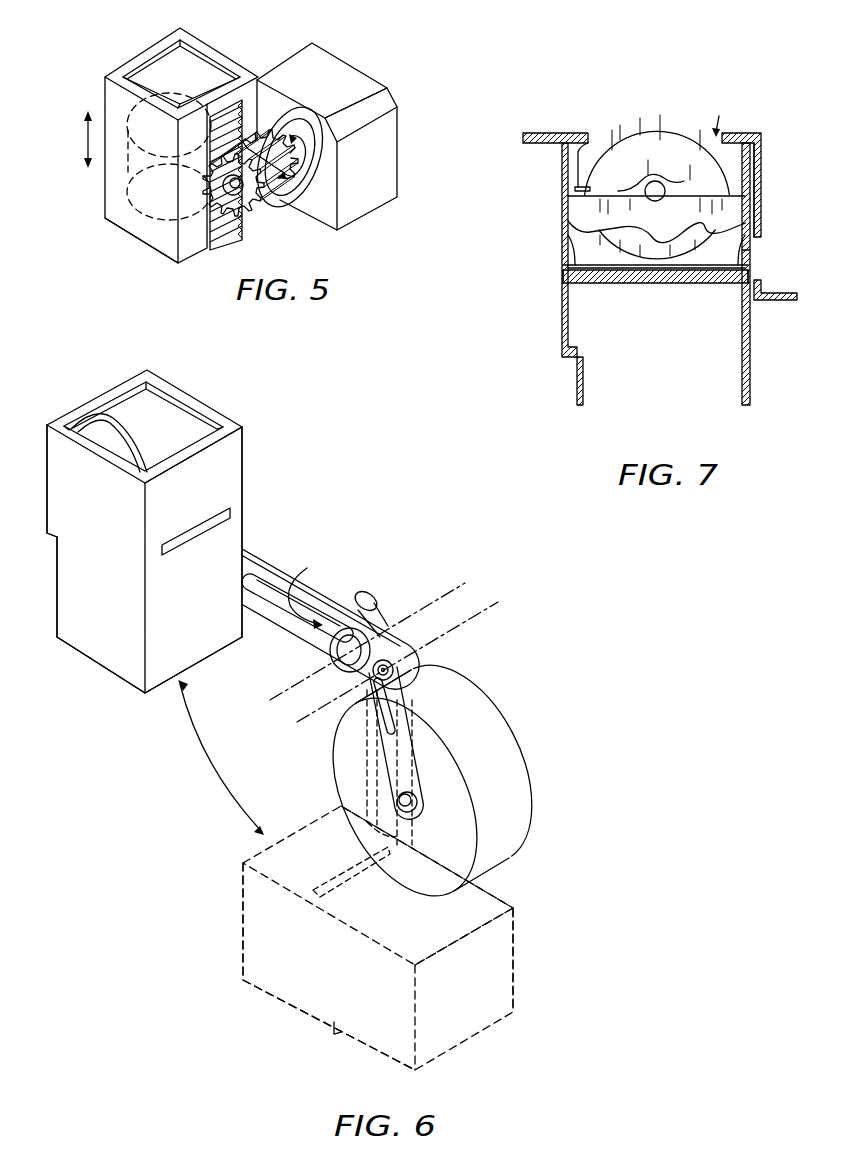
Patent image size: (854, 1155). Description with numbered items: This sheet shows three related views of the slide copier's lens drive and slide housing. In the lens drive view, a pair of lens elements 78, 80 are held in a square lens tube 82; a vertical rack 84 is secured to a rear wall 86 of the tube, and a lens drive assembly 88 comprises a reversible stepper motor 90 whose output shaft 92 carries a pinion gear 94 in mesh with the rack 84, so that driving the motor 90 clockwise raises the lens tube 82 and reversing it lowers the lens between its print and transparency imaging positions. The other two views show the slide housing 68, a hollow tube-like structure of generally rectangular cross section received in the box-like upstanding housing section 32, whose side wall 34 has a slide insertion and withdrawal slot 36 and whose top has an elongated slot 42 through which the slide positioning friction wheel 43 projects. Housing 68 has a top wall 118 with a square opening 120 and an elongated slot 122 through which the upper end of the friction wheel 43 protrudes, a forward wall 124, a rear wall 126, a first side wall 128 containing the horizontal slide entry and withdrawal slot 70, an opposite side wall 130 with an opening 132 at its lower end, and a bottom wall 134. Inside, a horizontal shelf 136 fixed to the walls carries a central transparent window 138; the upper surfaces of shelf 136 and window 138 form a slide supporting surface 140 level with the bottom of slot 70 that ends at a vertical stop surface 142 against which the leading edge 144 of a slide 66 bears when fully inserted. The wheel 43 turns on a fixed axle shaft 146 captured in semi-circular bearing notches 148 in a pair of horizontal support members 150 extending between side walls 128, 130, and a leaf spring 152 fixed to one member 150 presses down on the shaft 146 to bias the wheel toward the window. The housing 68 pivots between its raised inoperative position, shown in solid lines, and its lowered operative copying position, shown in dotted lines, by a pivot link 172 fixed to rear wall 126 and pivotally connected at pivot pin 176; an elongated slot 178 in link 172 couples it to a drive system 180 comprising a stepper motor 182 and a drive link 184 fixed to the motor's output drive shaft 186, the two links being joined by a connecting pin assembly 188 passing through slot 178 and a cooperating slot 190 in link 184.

In FIG. 5, the lens element 78 is at (138, 192).
In FIG. 5, the lens element 80 is at (140, 110).
In FIG. 5, the square lens tube 82 is at (211, 49).
In FIG. 5, the vertical rack 84 is at (236, 236).
In FIG. 5, the rear wall 86 is at (194, 255).
In FIG. 5, the lens drive assembly 88 is at (398, 99).
In FIG. 5, the reversible stepper motor 90 is at (350, 78).
In FIG. 5, the output shaft 92 is at (288, 156).
In FIG. 5, the pinion gear 94 is at (268, 210).
In FIG. 7, the housing section 32 is at (760, 138).
In FIG. 7, the side wall 34 is at (762, 168).
In FIG. 7, the slide insertion and withdrawal slot 36 is at (761, 286).
In FIG. 7, the elongated slot 42 is at (724, 117).
In FIG. 7, the slide positioning friction wheel 43 is at (672, 118).
In FIG. 6, the slide positioning friction wheel 43 is at (90, 430).
In FIG. 7, the slide 66 is at (750, 243).
In FIG. 6, the slide housing 68 is at (240, 460).
In FIG. 7, the slide entry and withdrawal slot 70 is at (751, 262).
In FIG. 6, the slide entry and withdrawal slot 70 is at (173, 551).
In FIG. 7, the top wall 118 is at (570, 158).
In FIG. 6, the top wall 118 is at (205, 412).
In FIG. 6, the square opening 120 is at (153, 395).
In FIG. 7, the elongated slot 122 is at (594, 137).
In FIG. 6, the elongated slot 122 is at (102, 450).
In FIG. 6, the forward wall 124 is at (290, 952).
In FIG. 6, the rear wall 126 is at (242, 497).
In FIG. 7, the first side wall 128 is at (752, 339).
In FIG. 6, the first side wall 128 is at (237, 535).
In FIG. 7, the opposite side wall 130 is at (562, 232).
In FIG. 6, the opposite side wall 130 is at (48, 452).
In FIG. 6, the opening 132 is at (364, 1040).
In FIG. 6, the bottom wall 134 is at (495, 972).
In FIG. 7, the shelf 136 is at (730, 285).
In FIG. 7, the transparent window 138 is at (630, 285).
In FIG. 7, the slide supporting surface 140 is at (578, 285).
In FIG. 7, the vertical stop surface 142 is at (565, 250).
In FIG. 7, the leading edge 144 is at (565, 272).
In FIG. 7, the axle shaft 146 is at (668, 184).
In FIG. 7, the bearing notches 148 is at (660, 204).
In FIG. 7, the friction wheel support members 150 is at (583, 205).
In FIG. 7, the leaf spring 152 is at (628, 186).
In FIG. 6, the pivot link 172 is at (283, 572).
In FIG. 6, the pivot pin 176 is at (373, 672).
In FIG. 6, the elongated slot 178 is at (306, 588).
In FIG. 6, the drive system 180 is at (545, 756).
In FIG. 6, the stepper motor 182 is at (478, 700).
In FIG. 6, the drive link 184 is at (390, 752).
In FIG. 6, the output drive shaft 186 is at (402, 800).
In FIG. 6, the connecting pin assembly 188 is at (330, 650).
In FIG. 6, the slot 190 is at (374, 604).